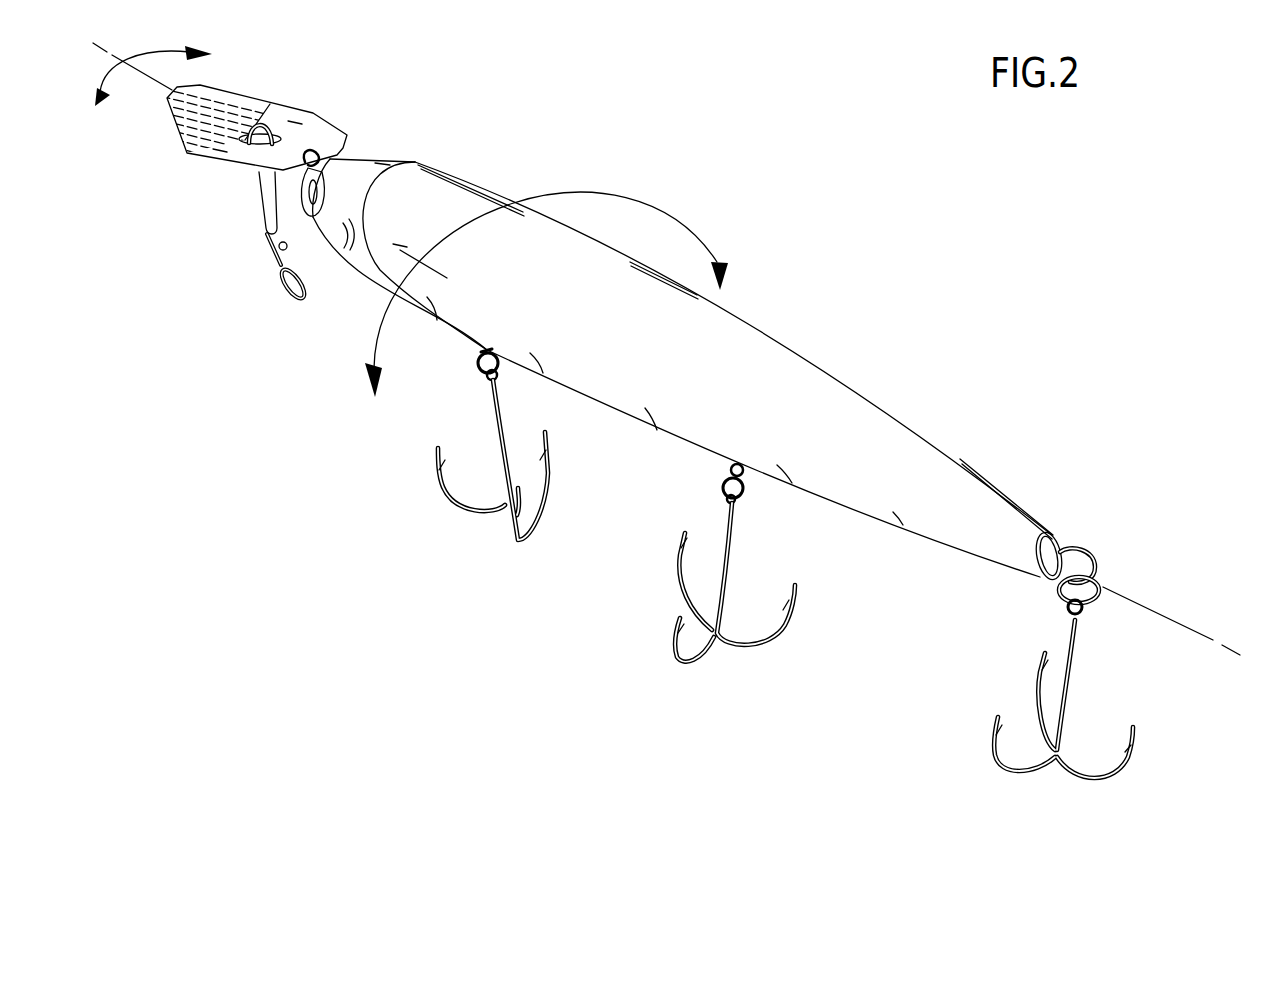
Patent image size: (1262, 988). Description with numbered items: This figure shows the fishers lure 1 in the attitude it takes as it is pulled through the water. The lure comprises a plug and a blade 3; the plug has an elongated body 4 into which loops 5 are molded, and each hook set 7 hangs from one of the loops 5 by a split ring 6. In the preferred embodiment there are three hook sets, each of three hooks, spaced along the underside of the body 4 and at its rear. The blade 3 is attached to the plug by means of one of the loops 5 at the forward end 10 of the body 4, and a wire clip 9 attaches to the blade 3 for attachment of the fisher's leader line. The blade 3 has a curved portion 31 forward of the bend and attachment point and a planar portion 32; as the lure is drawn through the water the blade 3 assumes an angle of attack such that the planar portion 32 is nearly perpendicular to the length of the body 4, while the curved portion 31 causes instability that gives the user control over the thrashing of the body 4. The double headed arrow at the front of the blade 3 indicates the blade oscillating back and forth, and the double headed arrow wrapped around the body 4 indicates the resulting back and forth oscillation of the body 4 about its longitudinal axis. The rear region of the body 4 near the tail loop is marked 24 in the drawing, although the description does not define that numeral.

The fishers lure 1 is at (482, 173).
The blade 3 is at (233, 103).
The body 4 is at (728, 338).
The loops 5 is at (343, 145).
The split ring 6 is at (477, 358).
The hook set 7 is at (472, 515).
The wire clip 9 is at (288, 302).
The forward end 10 is at (360, 267).
The tail portion 24 is at (960, 457).
The curved portion 31 is at (170, 120).
The planar portion 32 is at (200, 150).